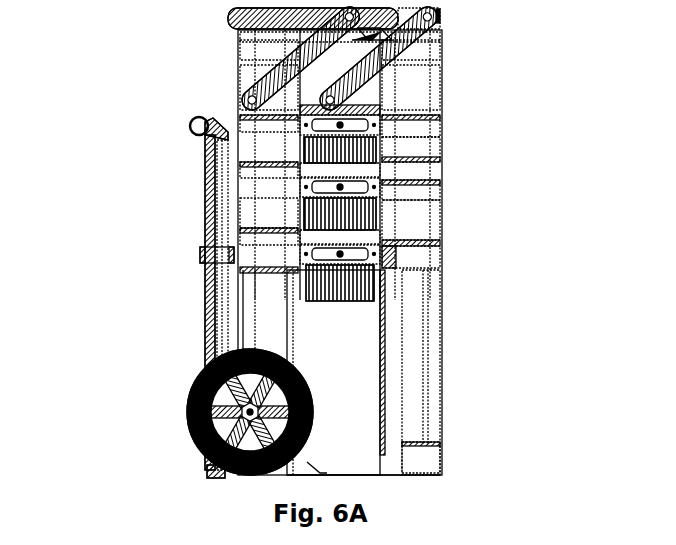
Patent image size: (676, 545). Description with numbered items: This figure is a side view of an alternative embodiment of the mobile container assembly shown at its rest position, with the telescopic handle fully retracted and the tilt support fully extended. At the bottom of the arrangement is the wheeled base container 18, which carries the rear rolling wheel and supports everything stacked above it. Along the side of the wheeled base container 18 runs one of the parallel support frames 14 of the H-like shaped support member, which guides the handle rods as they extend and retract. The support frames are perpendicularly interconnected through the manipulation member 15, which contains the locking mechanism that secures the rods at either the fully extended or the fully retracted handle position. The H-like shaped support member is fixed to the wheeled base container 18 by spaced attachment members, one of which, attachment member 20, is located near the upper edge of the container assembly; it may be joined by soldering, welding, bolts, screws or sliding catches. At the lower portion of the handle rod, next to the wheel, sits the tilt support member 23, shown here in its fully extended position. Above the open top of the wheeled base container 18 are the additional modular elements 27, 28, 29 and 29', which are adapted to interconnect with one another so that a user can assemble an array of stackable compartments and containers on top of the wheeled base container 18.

The support frame 14 is at (205, 218).
The manipulation member 15 is at (205, 176).
The wheeled base container 18 is at (415, 332).
The attachment member 20 is at (200, 254).
The tilt support member 23 is at (207, 470).
The modular element 27 is at (438, 218).
The modular element 28 is at (438, 148).
The modular element 29 is at (383, 58).
The modular element 29' is at (425, 58).